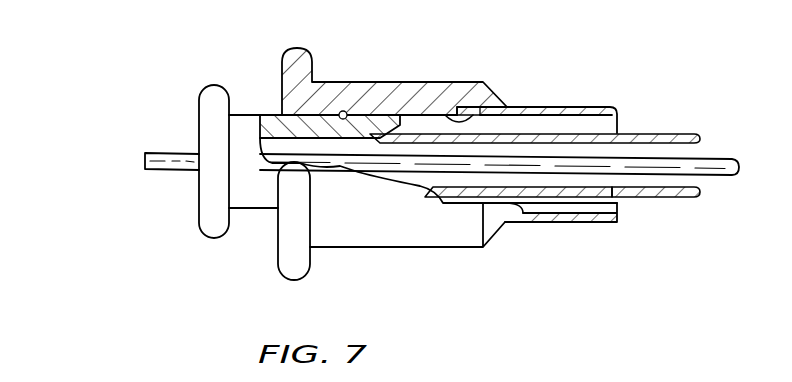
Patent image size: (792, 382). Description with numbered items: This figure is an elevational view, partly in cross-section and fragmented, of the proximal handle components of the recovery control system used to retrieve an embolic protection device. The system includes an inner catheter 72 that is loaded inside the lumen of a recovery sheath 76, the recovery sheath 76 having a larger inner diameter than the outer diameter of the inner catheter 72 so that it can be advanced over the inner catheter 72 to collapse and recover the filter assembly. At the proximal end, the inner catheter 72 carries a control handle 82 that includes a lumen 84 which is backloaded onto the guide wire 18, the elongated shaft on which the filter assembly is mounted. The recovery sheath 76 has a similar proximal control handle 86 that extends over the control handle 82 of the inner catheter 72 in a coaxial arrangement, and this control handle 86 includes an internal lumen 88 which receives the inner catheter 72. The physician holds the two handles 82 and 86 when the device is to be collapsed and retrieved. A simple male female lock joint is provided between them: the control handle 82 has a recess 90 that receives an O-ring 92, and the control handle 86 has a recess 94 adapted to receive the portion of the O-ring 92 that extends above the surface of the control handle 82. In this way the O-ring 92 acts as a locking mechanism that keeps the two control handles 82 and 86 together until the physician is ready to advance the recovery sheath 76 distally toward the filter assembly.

The guide wire 18 is at (177, 157).
The control handle 82 is at (243, 130).
The proximal control handle 86 is at (432, 98).
The internal lumen 88 is at (478, 117).
The recovery sheath 76 is at (591, 107).
The inner catheter 72 is at (683, 135).
The lumen 84 is at (688, 183).
The recess 90 is at (358, 172).
The O-ring 92 is at (343, 112).
The recess 94 is at (350, 113).